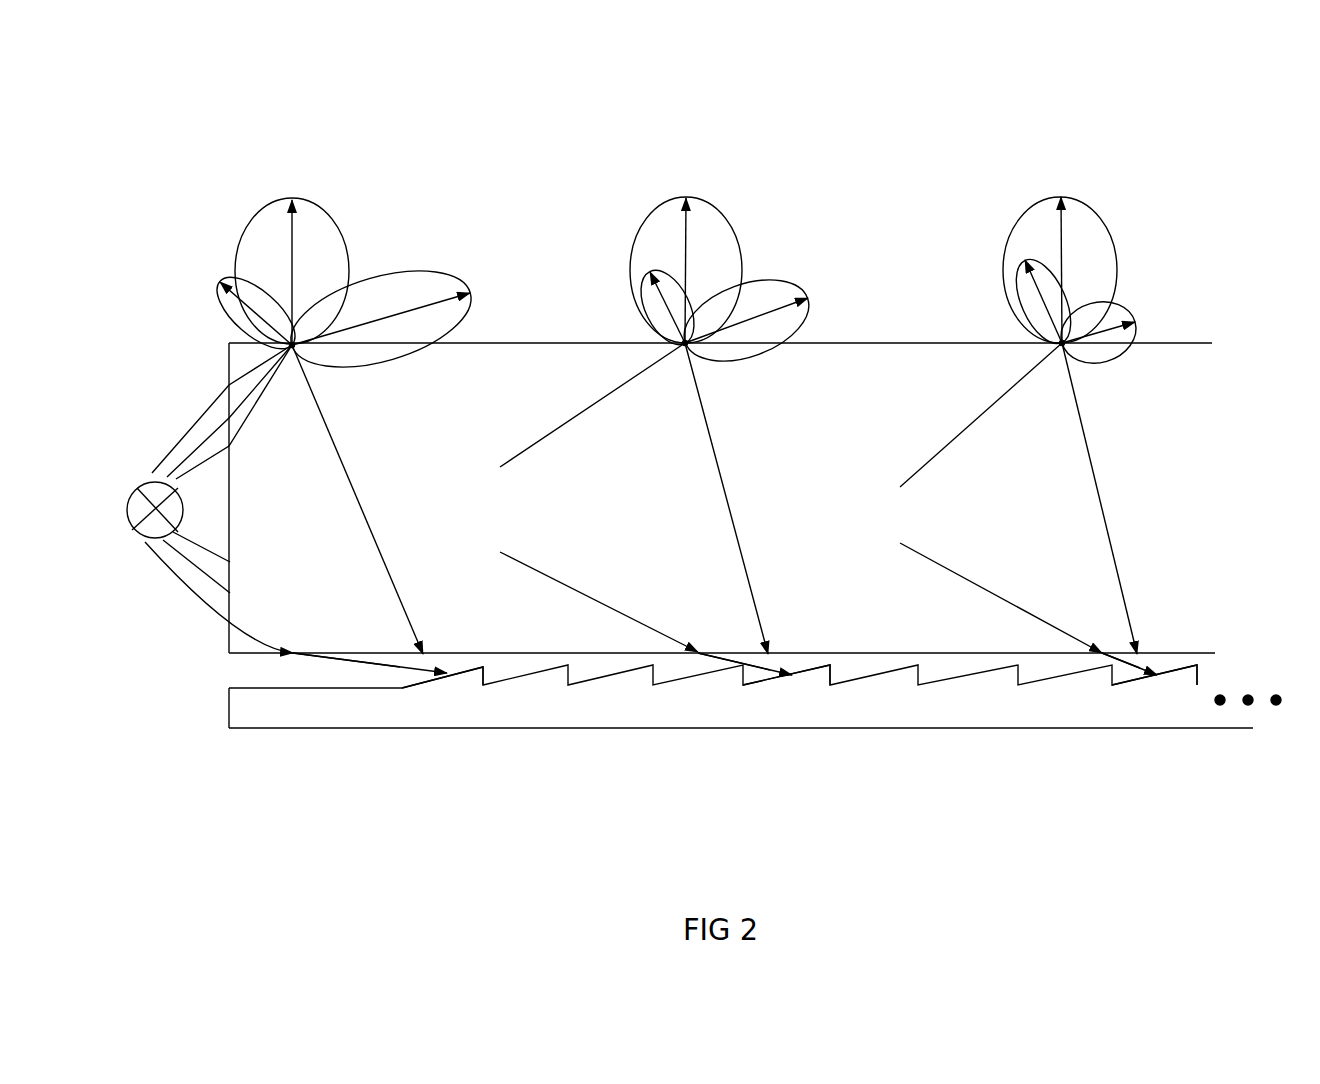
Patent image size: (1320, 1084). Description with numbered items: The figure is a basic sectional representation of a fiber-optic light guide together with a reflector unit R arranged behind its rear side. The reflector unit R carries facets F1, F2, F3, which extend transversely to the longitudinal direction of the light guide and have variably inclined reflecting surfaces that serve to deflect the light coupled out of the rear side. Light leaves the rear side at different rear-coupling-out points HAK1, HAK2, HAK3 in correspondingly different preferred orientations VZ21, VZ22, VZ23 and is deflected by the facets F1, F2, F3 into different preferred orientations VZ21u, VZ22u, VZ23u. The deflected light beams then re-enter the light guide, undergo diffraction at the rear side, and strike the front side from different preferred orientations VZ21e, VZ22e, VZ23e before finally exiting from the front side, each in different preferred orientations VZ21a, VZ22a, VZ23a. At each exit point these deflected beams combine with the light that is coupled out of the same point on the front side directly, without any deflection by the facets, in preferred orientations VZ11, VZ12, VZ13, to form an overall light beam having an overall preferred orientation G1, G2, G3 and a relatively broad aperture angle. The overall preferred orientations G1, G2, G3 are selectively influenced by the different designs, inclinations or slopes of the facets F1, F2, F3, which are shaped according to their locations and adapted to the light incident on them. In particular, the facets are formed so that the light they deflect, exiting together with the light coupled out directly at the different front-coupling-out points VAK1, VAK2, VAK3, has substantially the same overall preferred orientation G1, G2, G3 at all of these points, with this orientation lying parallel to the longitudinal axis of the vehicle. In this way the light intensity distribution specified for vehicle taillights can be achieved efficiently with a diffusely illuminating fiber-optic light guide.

The reflector unit R is at (242, 717).
The overall preferred orientation G1 is at (293, 245).
The overall preferred orientation G2 is at (688, 230).
The overall preferred orientation G3 is at (1062, 242).
The preferred orientation of directly coupled-out light VZ11 is at (385, 317).
The preferred orientation of directly coupled-out light VZ12 is at (762, 312).
The preferred orientation of directly coupled-out light VZ13 is at (1110, 330).
The exit preferred orientation of deflected light VZ21a is at (263, 316).
The exit preferred orientation of deflected light VZ22a is at (657, 295).
The exit preferred orientation of deflected light VZ23a is at (1035, 288).
The front-coupling-out point VAK1 is at (292, 350).
The front-coupling-out point VAK2 is at (685, 350).
The front-coupling-out point VAK3 is at (1062, 350).
The preferred orientation of re-entering light VZ21e is at (380, 553).
The preferred orientation of re-entering light VZ22e is at (738, 543).
The preferred orientation of re-entering light VZ23e is at (1107, 530).
The preferred orientation of deflected light VZ21u is at (437, 673).
The preferred orientation of deflected light VZ22u is at (780, 670).
The preferred orientation of deflected light VZ23u is at (1143, 670).
The preferred orientation of rear-coupled-out light VZ21 is at (380, 667).
The preferred orientation of rear-coupled-out light VZ22 is at (767, 668).
The preferred orientation of rear-coupled-out light VZ23 is at (1132, 668).
The rear-coupling-out point HAK1 is at (288, 655).
The rear-coupling-out point HAK2 is at (698, 653).
The rear-coupling-out point HAK3 is at (1102, 655).
The facet F1 is at (462, 670).
The facet F2 is at (812, 667).
The facet F3 is at (1177, 667).